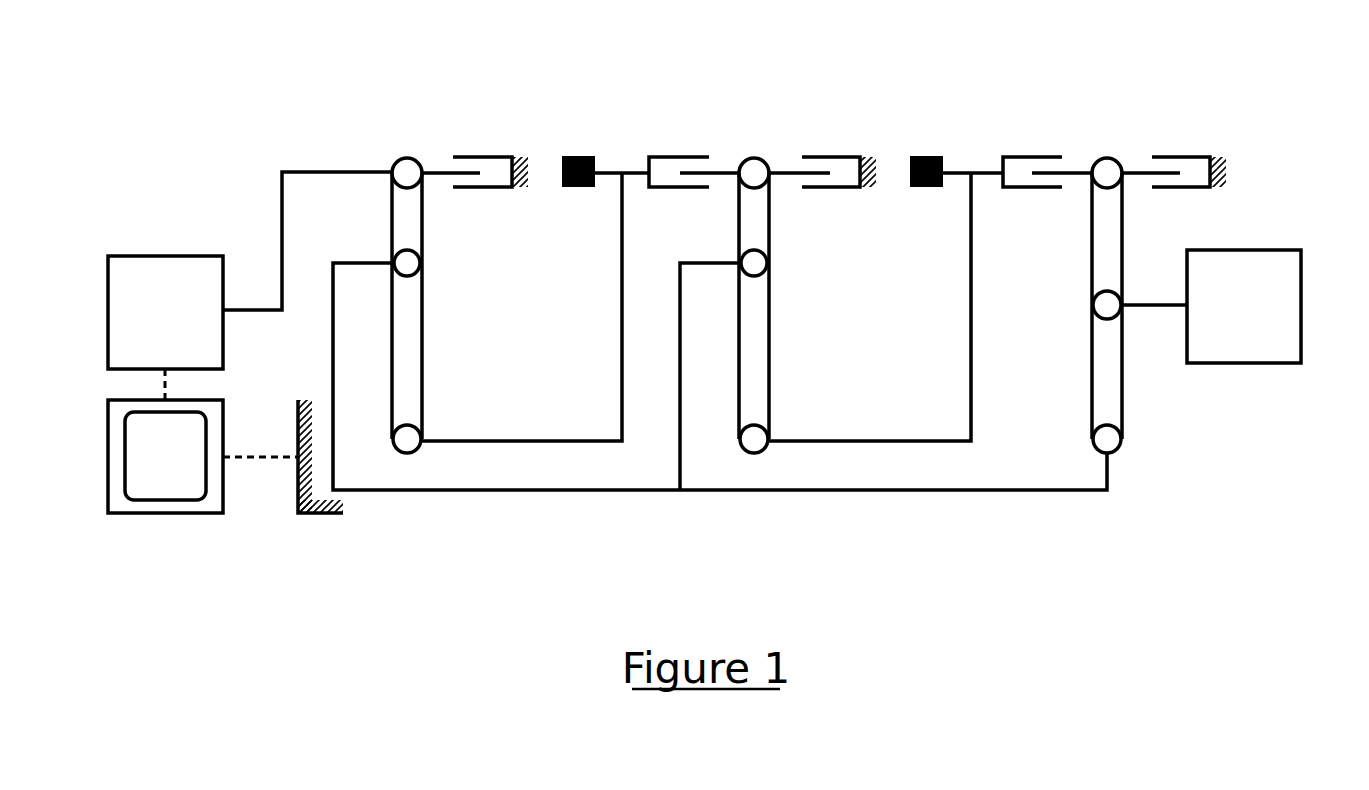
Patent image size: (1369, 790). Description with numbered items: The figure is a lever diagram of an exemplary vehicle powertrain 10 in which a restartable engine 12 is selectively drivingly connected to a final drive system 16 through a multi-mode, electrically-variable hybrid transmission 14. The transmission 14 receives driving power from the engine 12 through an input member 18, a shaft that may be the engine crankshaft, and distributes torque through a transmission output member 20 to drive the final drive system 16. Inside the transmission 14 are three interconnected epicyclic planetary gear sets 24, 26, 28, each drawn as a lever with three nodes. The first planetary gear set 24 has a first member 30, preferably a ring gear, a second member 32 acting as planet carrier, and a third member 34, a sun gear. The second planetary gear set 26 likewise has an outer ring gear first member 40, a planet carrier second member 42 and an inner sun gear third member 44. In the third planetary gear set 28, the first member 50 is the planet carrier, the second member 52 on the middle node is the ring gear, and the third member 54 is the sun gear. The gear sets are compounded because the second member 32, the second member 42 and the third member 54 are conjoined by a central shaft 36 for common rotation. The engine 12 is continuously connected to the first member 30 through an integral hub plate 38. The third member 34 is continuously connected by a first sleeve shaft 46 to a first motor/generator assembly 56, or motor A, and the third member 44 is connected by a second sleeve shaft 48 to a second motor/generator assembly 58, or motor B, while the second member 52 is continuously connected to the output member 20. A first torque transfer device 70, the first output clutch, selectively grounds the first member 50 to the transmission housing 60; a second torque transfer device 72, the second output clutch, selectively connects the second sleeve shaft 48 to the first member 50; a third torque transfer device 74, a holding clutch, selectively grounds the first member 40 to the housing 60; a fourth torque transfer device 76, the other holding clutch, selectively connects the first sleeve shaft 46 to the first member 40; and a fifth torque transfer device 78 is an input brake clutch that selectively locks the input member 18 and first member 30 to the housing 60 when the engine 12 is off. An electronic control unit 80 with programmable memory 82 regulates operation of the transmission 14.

The vehicle powertrain system 10 is at (166, 130).
The restartable engine 12 is at (108, 326).
The multi-mode electrically-variable hybrid transmission 14 is at (626, 106).
The final drive system 16 is at (1303, 303).
The input member 18 is at (258, 290).
The transmission output member 20 is at (1150, 308).
The first planetary gear set 24 is at (467, 288).
The second planetary gear set 26 is at (813, 291).
The third planetary gear set 28 is at (1089, 288).
The first member of the first planetary gear set 30 is at (407, 157).
The second member of the first planetary gear set 32 is at (421, 263).
The third member of the first planetary gear set 34 is at (418, 452).
The central shaft 36 is at (543, 492).
The integral hub plate 38 is at (330, 170).
The first member of the second planetary gear set 40 is at (754, 157).
The second member of the second planetary gear set 42 is at (768, 263).
The third member of the second planetary gear set 44 is at (763, 455).
The first sleeve shaft 46 is at (578, 438).
The second sleeve shaft 48 is at (935, 438).
The first member of the third planetary gear set 50 is at (1107, 157).
The second member of the third planetary gear set 52 is at (1093, 303).
The third member of the third planetary gear set 54 is at (1093, 440).
The first motor/generator assembly 56 is at (578, 190).
The second motor/generator assembly 58 is at (927, 188).
The transmission housing 60 is at (518, 157).
The first torque transfer device 70 is at (1216, 204).
The second torque transfer device 72 is at (1052, 140).
The third torque transfer device 74 is at (872, 203).
The fourth torque transfer device 76 is at (668, 138).
The fifth torque transfer device 78 is at (524, 203).
The electronic control unit 80 is at (174, 433).
The programmable memory 82 is at (125, 483).